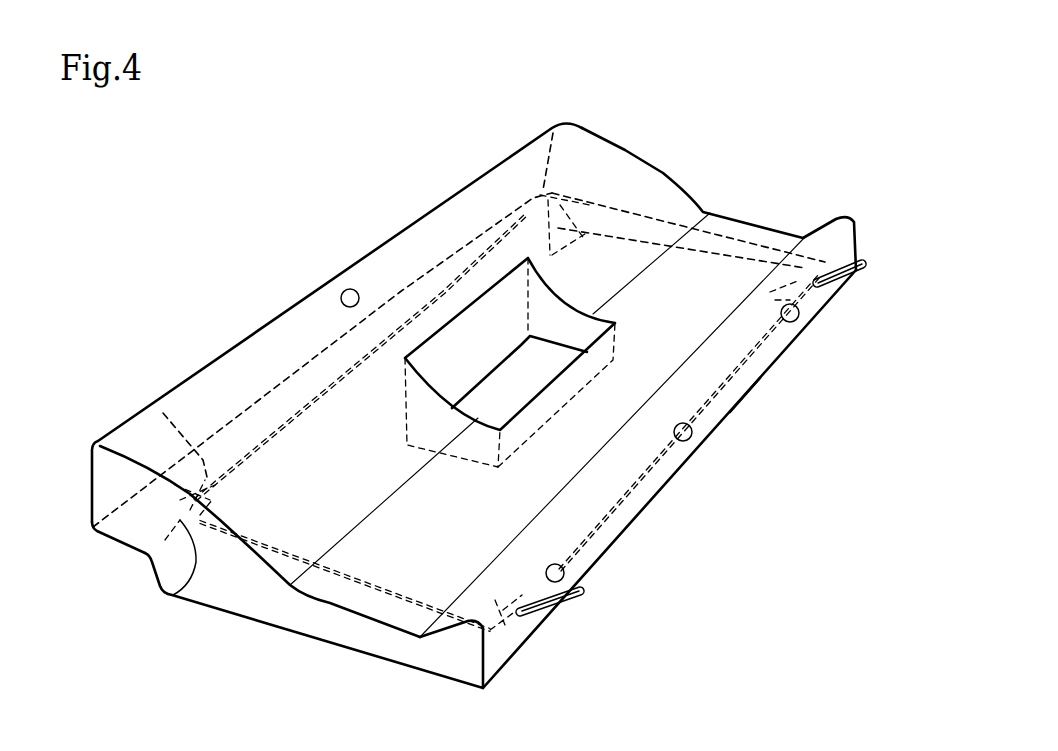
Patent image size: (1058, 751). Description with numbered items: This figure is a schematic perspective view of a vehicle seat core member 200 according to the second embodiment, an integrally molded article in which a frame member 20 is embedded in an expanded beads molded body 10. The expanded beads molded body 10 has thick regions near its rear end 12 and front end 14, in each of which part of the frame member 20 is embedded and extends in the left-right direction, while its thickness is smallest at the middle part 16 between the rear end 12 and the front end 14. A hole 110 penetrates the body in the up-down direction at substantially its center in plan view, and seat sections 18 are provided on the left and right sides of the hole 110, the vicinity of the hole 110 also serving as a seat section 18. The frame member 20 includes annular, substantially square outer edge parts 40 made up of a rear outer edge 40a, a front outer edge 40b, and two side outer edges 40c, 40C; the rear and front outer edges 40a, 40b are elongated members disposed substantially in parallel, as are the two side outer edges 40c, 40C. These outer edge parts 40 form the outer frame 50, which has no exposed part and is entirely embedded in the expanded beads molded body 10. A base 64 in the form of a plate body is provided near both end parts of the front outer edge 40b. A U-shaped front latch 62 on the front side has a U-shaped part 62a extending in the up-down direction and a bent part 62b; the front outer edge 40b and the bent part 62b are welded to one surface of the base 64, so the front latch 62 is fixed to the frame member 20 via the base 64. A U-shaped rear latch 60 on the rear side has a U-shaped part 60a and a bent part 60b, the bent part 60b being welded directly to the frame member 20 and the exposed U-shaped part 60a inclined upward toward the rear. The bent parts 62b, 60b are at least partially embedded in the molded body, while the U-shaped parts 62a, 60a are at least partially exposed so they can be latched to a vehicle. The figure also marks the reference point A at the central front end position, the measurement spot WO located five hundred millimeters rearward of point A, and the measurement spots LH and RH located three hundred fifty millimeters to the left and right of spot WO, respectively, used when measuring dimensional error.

The seat core member 200 is at (285, 186).
The expanded beads molded body 10 is at (274, 309).
The rear end 12 is at (620, 530).
The front end 14 is at (225, 352).
The middle part 16 is at (407, 637).
The seat section 18 is at (620, 258).
The frame member 20 is at (317, 600).
The outer edge parts 40 is at (461, 413).
The rear outer edge 40a is at (660, 482).
The front outer edge 40b is at (403, 300).
The side outer edge 40c is at (720, 232).
The side outer edge 40C is at (257, 567).
The outer frame 50 is at (747, 380).
The rear latch 60 is at (853, 282).
The U-shaped part 60a is at (567, 610).
The bent part 60b is at (522, 647).
The front latch 62 is at (593, 228).
The U-shaped part 62a is at (173, 597).
The bent part 62b is at (190, 490).
The base 64 is at (527, 185).
The hole 110 is at (520, 365).
The reference point A is at (349, 289).
The measurement spot LH is at (565, 570).
The measurement spot RH is at (803, 320).
The measurement spot WO is at (690, 440).